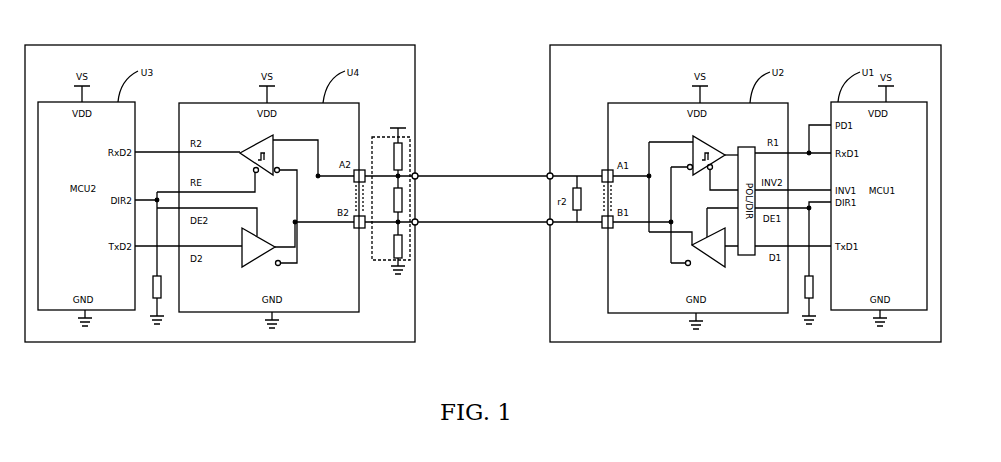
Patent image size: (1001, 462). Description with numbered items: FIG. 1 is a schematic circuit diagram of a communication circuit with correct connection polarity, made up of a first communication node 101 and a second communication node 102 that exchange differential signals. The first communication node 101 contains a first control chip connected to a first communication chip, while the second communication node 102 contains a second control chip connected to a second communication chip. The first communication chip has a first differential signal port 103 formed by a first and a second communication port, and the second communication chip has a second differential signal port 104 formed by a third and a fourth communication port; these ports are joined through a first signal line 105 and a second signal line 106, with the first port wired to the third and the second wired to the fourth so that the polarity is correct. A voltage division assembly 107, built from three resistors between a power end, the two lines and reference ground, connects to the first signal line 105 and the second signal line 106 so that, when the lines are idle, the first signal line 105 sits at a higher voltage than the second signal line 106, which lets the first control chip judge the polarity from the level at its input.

The first communication node 101 is at (745, 45).
The second communication node 102 is at (183, 45).
The first differential signal port 103 is at (609, 168).
The second differential signal port 104 is at (357, 230).
The first signal line 105 is at (444, 176).
The second signal line 106 is at (485, 222).
The voltage division assembly 107 is at (408, 146).